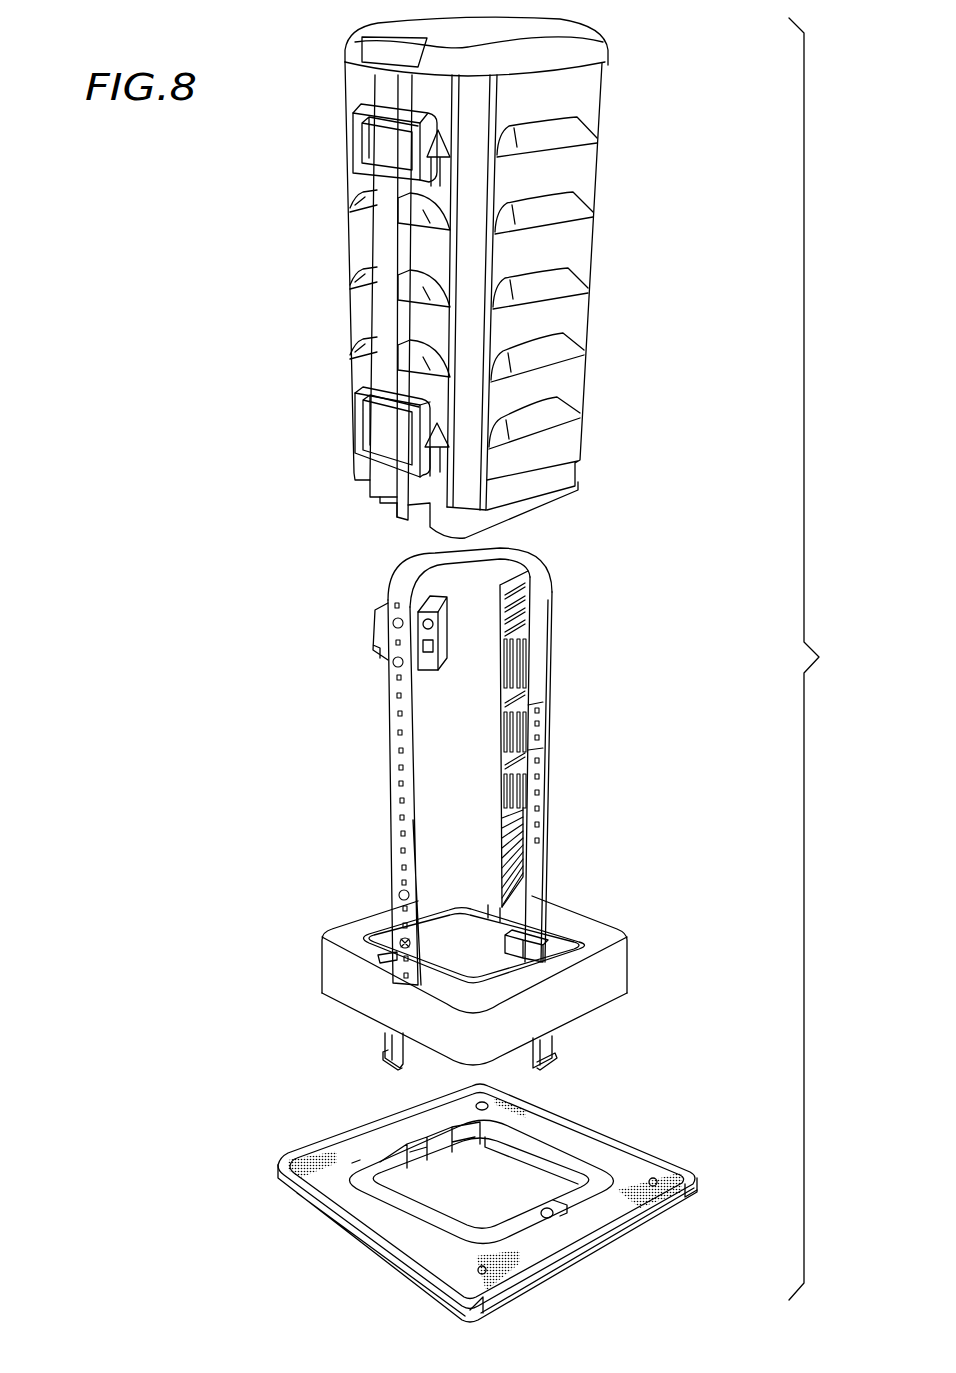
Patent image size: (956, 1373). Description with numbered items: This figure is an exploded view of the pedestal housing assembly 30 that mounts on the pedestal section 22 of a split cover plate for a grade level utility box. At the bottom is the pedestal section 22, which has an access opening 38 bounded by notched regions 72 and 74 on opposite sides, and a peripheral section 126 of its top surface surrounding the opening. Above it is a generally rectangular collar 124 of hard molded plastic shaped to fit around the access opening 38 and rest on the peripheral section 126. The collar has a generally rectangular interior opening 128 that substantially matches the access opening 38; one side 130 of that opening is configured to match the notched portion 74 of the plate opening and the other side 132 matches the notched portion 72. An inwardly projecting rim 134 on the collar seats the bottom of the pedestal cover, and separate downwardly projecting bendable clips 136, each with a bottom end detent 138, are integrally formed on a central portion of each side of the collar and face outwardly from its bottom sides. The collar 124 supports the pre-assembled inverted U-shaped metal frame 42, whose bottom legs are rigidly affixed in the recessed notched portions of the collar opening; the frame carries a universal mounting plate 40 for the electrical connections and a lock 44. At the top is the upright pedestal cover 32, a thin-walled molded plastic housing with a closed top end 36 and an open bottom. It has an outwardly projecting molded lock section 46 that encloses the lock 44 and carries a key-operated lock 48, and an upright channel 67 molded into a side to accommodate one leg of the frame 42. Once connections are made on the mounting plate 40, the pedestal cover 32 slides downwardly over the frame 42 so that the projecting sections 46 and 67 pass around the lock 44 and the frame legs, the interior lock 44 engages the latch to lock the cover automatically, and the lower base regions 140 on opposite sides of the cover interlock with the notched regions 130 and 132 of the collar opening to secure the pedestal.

The pedestal section 22 is at (465, 1203).
The pedestal housing assembly 30 is at (613, 180).
The pedestal cover 32 is at (572, 318).
The closed top end 36 is at (497, 33).
The access opening 38 is at (531, 1157).
The universal mounting plate 40 is at (514, 666).
The inverted U-shaped frame 42 is at (400, 760).
The lock 44 is at (441, 625).
The lock section 46 is at (355, 143).
The key-operated lock 48 is at (368, 162).
The upright channel 67 is at (388, 250).
The notched region 72 is at (557, 1215).
The notched region 74 is at (417, 1143).
The collar 124 is at (481, 1014).
The peripheral section 126 is at (373, 1158).
The interior opening 128 is at (440, 917).
The side of collar opening 130 is at (390, 950).
The other side of collar opening 132 is at (555, 938).
The inwardly projecting rim 134 is at (500, 908).
The bendable clips 136 is at (397, 1045).
The bottom end detent 138 is at (387, 1058).
The lower base regions 140 is at (392, 504).